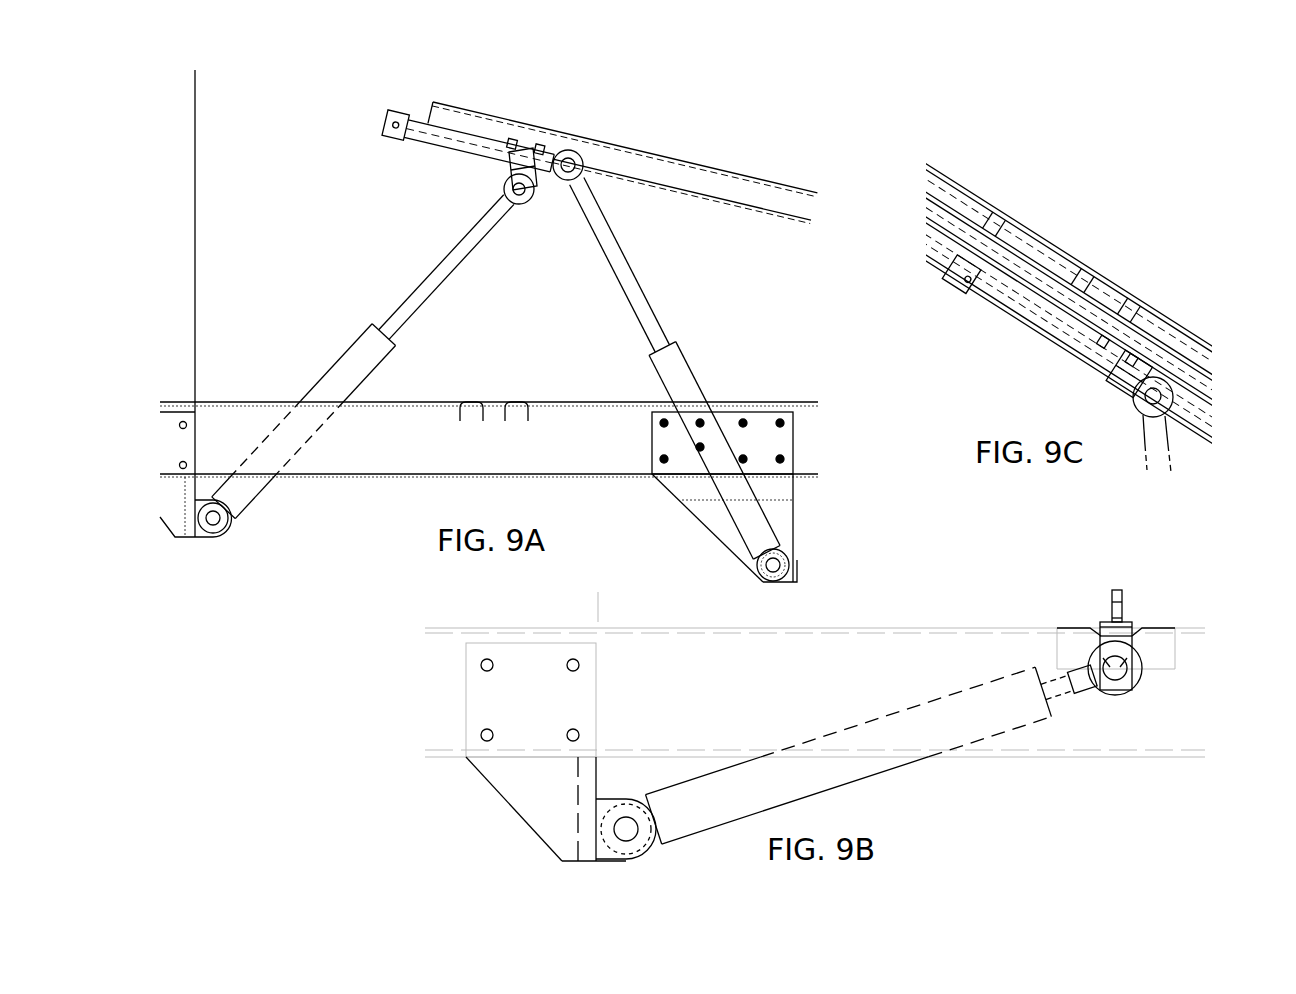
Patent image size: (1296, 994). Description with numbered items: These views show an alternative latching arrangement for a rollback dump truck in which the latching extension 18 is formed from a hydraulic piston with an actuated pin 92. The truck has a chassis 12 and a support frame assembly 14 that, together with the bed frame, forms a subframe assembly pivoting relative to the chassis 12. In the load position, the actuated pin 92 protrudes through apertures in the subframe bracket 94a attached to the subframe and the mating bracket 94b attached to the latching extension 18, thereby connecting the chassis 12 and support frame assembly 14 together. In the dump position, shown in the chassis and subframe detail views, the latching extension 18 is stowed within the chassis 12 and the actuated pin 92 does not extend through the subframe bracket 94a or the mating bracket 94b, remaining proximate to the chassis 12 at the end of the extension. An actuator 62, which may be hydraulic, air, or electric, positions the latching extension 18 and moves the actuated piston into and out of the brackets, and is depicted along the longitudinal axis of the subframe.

In FIG. 9A, the chassis 12 is at (389, 433).
In FIG. 9B, the chassis 12 is at (1132, 735).
In FIG. 9A, the support frame assembly 14 is at (684, 172).
In FIG. 9C, the support frame assembly 14 is at (1053, 260).
In FIG. 9A, the latching extension 18 is at (430, 280).
In FIG. 9B, the latching extension 18 is at (1058, 683).
In FIG. 9A, the actuator 62 is at (428, 127).
In FIG. 9C, the actuator 62 is at (990, 300).
In FIG. 9A, the actuated pin 92 is at (524, 165).
In FIG. 9C, the actuated pin 92 is at (1097, 350).
In FIG. 9A, the subframe bracket 94a is at (516, 148).
In FIG. 9C, the subframe bracket 94a is at (1130, 363).
In FIG. 9A, the mating bracket 94b is at (540, 146).
In FIG. 9B, the mating bracket 94b is at (1117, 590).